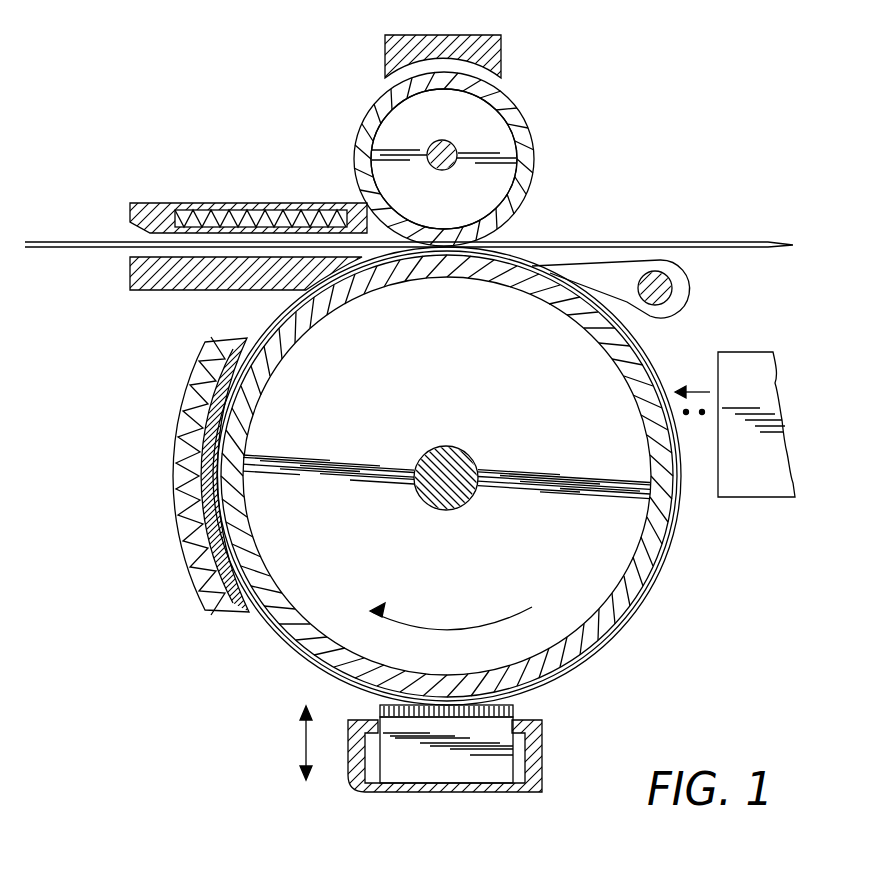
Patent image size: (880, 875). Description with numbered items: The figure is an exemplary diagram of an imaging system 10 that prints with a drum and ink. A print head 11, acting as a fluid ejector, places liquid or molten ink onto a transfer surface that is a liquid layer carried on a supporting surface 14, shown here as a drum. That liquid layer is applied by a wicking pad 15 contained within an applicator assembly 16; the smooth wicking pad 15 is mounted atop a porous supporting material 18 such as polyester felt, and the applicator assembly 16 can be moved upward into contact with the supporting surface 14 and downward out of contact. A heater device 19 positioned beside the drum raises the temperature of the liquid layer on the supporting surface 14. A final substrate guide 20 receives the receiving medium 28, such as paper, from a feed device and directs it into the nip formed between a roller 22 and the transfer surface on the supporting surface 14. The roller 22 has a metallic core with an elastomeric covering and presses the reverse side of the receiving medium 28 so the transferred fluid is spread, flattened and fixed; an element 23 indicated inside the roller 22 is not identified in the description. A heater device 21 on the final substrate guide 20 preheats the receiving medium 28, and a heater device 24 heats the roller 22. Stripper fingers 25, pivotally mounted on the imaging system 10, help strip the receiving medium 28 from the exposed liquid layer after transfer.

The imaging system 10 is at (643, 143).
The print head 11 is at (752, 352).
The supporting surface 14 is at (607, 597).
The wicking pad 15 is at (516, 711).
The applicator assembly 16 is at (448, 792).
The porous supporting material 18 is at (350, 760).
The heater device 19 is at (172, 460).
The final substrate guide 20 is at (195, 292).
The heater device 21 is at (238, 204).
The roller 22 is at (537, 150).
The roller core 23 is at (400, 118).
The heater device 24 is at (505, 70).
The stripper fingers 25 is at (682, 312).
The receiving medium 28 is at (655, 242).